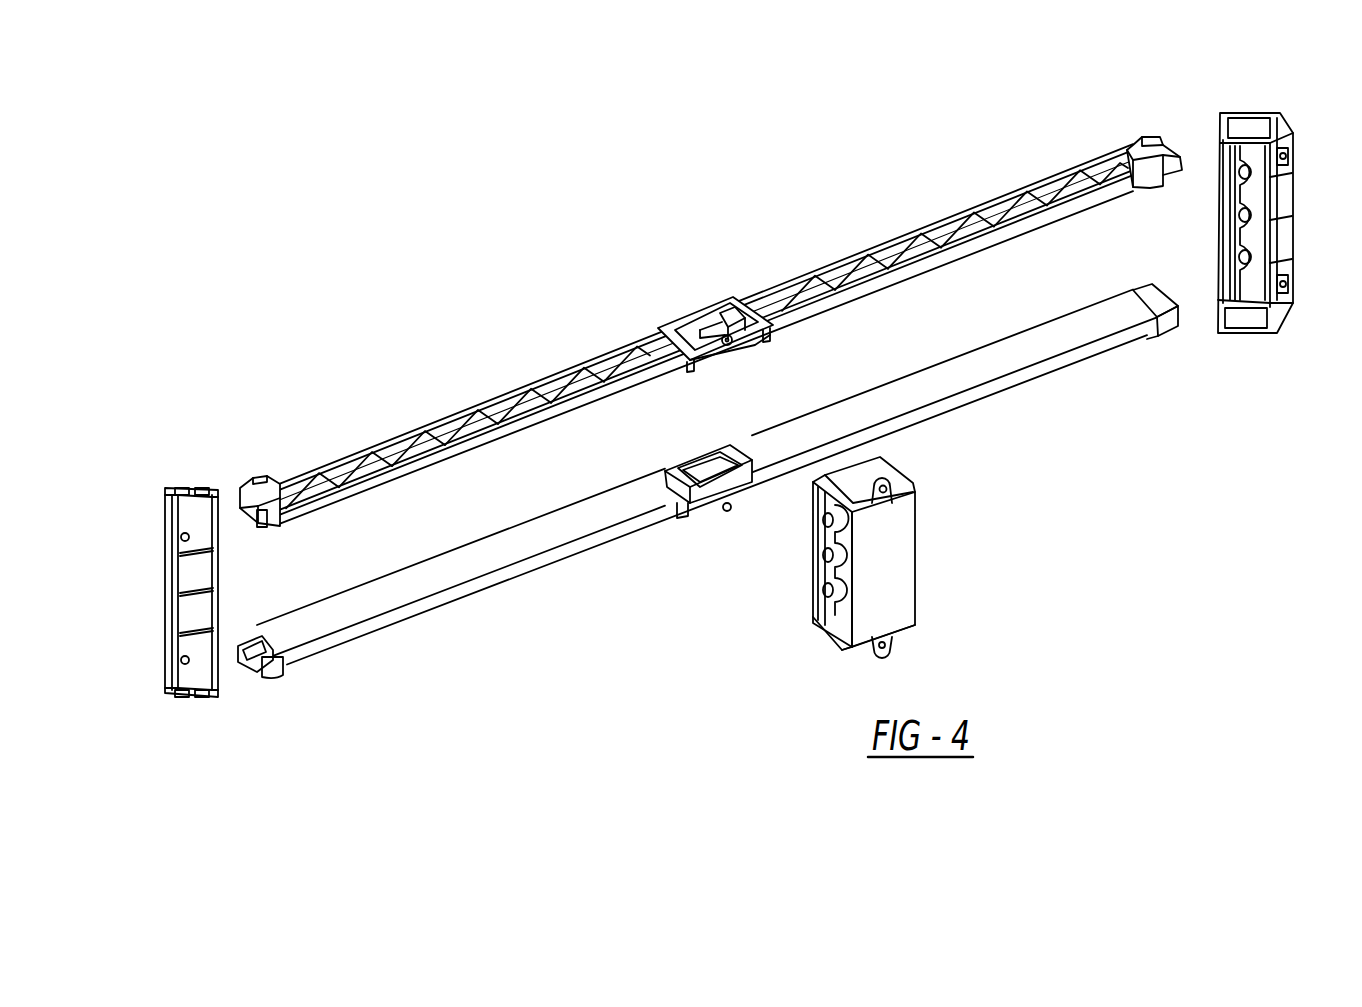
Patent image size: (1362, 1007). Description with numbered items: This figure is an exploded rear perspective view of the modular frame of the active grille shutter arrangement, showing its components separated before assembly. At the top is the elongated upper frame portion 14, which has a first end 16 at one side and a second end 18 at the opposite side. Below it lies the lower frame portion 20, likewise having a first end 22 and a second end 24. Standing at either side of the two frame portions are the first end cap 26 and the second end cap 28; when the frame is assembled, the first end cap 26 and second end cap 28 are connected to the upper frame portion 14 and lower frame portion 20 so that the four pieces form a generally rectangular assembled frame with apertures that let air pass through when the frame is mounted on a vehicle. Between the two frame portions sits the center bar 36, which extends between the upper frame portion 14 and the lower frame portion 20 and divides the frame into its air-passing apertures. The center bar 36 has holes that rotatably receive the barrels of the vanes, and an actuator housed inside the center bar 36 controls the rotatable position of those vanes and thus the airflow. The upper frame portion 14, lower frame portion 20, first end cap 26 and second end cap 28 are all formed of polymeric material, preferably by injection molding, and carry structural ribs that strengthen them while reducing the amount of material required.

The upper frame portion 14 is at (588, 358).
The first end 16 is at (250, 480).
The second end 18 is at (1146, 133).
The lower frame portion 20 is at (500, 555).
The first end 22 is at (258, 673).
The second end 24 is at (1170, 330).
The first end cap 26 is at (188, 580).
The second end cap 28 is at (1283, 198).
The center bar 36 is at (885, 561).